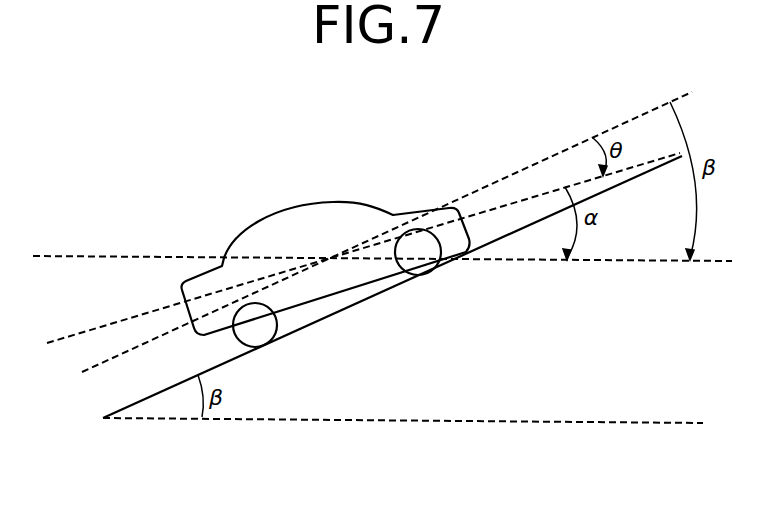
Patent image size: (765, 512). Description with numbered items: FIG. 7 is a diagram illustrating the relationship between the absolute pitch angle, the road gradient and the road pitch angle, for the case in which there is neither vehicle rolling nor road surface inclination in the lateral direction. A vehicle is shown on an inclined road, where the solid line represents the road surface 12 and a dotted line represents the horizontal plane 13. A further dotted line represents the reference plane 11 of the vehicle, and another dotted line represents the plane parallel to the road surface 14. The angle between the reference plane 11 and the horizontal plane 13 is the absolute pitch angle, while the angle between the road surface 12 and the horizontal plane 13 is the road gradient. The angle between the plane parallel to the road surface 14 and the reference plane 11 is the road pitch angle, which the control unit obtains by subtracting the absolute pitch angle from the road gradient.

The reference plane 11 is at (493, 207).
The road surface 12 is at (352, 303).
The horizontal plane 13 is at (660, 262).
The plane parallel to road surface 14 is at (545, 160).